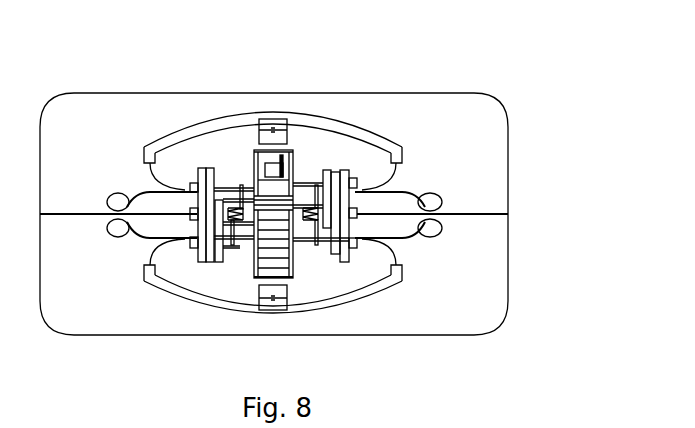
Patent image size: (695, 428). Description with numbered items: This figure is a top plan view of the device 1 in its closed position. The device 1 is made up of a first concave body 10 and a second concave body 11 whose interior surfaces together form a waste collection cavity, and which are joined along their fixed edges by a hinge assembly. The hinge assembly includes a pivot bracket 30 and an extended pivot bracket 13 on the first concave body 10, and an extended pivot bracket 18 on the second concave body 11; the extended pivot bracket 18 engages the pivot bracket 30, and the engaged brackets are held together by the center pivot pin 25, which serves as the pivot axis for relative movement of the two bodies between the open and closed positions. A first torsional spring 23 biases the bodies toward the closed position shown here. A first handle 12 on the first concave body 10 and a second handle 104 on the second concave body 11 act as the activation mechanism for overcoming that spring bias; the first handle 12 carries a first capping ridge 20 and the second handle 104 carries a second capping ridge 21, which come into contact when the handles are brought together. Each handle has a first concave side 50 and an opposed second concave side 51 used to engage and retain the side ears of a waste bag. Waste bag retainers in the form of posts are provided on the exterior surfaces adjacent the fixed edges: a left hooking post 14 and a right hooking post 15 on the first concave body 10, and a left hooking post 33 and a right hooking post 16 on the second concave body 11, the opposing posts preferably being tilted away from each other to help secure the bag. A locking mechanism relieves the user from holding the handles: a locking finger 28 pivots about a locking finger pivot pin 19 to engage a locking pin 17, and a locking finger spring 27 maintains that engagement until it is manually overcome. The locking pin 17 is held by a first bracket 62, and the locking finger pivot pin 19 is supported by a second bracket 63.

The device 1 is at (545, 195).
The first concave body 10 is at (400, 100).
The second concave body 11 is at (116, 326).
The first handle 12 is at (318, 275).
The extended pivot bracket 13 is at (198, 168).
The left hooking post 14 is at (42, 125).
The right hooking post 15 is at (425, 200).
The right hooking post 16 is at (430, 233).
The locking pin 17 is at (228, 246).
The extended pivot bracket 18 is at (344, 258).
The locking finger pivot pin 19 is at (224, 183).
The first capping ridge 20 is at (172, 165).
The second capping ridge 21 is at (173, 287).
The first torsional spring 23 is at (233, 190).
The center pivot pin 25 is at (345, 170).
The locking finger spring 27 is at (294, 150).
The locking finger 28 is at (255, 150).
The pivot bracket 30 is at (205, 260).
The left hooking post 33 is at (108, 231).
The first concave side 50 is at (114, 196).
The second concave side 51 is at (150, 250).
The first bracket 62 is at (317, 185).
The second bracket 63 is at (259, 121).
The second handle 104 is at (153, 185).